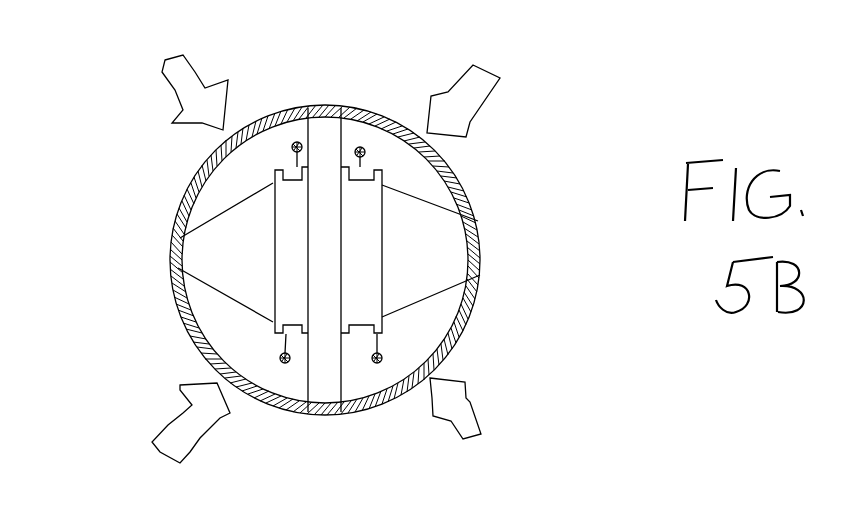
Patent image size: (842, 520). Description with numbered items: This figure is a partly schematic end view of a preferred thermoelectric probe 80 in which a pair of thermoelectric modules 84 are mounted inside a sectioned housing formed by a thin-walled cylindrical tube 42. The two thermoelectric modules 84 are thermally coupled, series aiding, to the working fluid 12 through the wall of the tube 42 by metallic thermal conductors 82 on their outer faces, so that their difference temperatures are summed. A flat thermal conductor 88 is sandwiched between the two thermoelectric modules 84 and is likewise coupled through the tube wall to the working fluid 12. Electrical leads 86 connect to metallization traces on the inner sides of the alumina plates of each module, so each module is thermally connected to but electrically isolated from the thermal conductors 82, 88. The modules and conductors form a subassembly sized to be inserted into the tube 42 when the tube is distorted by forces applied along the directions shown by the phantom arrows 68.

The working fluid 12 is at (55, 105).
The thin-walled cylindrical tube 42 is at (250, 260).
The phantom arrows 68 is at (372, 255).
The probe 80 is at (79, 455).
The thermal conductors 82 is at (322, 247).
The thermoelectric modules 84 is at (359, 272).
The electrical leads 86 is at (336, 264).
The flat thermal conductor 88 is at (454, 260).